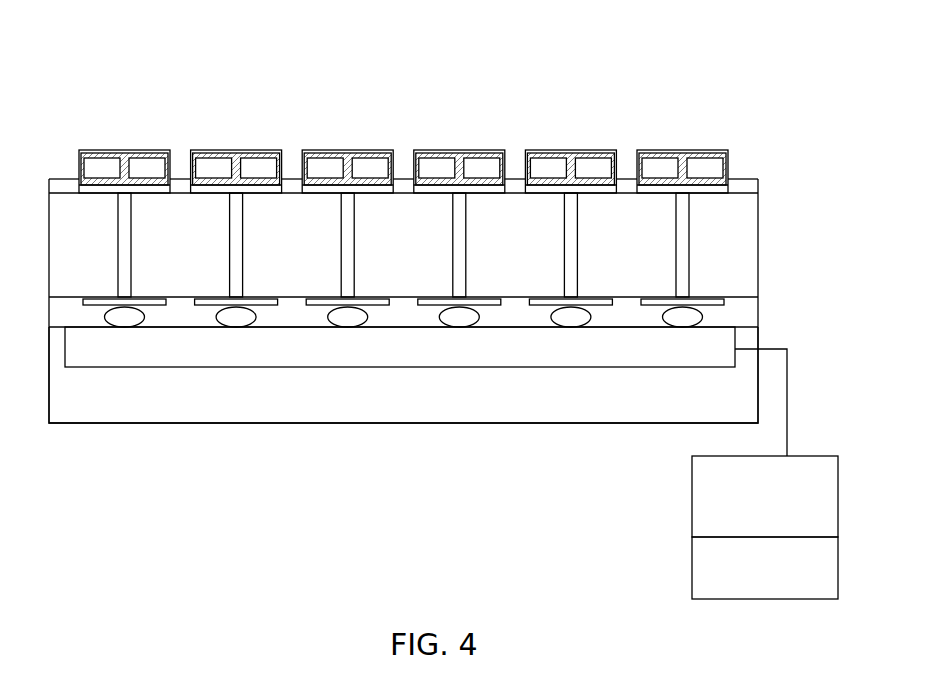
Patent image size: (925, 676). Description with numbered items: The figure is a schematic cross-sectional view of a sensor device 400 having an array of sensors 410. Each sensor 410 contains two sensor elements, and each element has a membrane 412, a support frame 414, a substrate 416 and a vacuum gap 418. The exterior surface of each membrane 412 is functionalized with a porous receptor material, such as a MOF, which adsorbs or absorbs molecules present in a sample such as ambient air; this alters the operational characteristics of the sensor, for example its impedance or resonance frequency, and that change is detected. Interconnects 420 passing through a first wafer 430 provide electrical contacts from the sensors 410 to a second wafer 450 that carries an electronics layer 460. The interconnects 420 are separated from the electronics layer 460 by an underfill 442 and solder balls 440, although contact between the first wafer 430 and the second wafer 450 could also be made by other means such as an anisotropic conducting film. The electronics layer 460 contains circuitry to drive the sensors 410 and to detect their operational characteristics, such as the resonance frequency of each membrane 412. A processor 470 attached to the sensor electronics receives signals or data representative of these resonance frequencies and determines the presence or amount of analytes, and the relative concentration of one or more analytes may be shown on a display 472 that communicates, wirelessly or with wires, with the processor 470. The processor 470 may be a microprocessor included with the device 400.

The sensor device 400 is at (92, 60).
The sensors 410 is at (447, 121).
The membrane 412 is at (713, 157).
The support frame 414 is at (728, 167).
The substrate 416 is at (705, 191).
The vacuum gap 418 is at (697, 170).
The interconnects 420 is at (122, 230).
The first wafer 430 is at (758, 257).
The solder balls 440 is at (140, 315).
The underfill 442 is at (758, 312).
The second wafer 450 is at (405, 405).
The electronics layer 460 is at (417, 357).
The processor 470 is at (692, 492).
The display 472 is at (692, 565).